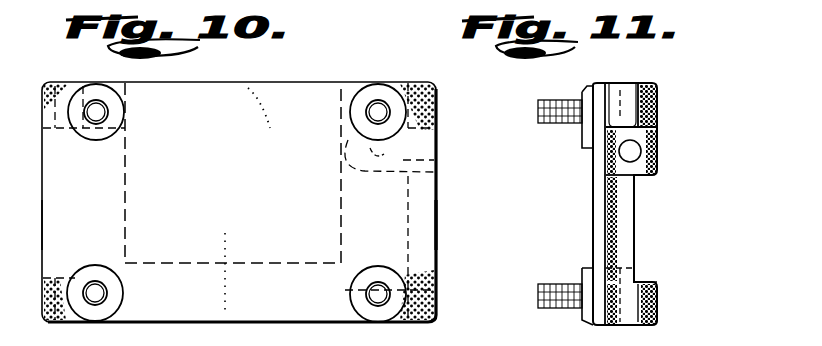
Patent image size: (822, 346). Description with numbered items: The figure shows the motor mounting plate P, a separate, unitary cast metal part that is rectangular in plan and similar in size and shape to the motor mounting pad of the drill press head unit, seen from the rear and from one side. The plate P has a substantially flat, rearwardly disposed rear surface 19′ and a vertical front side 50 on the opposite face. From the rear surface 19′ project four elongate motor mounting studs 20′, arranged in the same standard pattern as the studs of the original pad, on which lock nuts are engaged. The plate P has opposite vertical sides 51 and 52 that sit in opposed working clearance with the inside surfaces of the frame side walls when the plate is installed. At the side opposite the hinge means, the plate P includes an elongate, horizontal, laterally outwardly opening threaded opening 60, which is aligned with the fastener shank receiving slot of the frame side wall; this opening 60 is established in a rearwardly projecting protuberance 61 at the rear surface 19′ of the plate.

In FIG. 10, the motor mounting plate P is at (308, 81).
In FIG. 10, the rear surface 19′ is at (270, 153).
In FIG. 11, the rear surface 19′ is at (593, 186).
In FIG. 10, the motor mounting studs 20′ is at (109, 112).
In FIG. 11, the motor mounting studs 20′ is at (560, 127).
In FIG. 11, the front side 50 is at (606, 223).
In FIG. 10, the vertical side 51 is at (37, 219).
In FIG. 10, the vertical side 52 is at (437, 222).
In FIG. 11, the vertical side 52 is at (593, 228).
In FIG. 10, the threaded opening 60 is at (392, 174).
In FIG. 11, the threaded opening 60 is at (619, 152).
In FIG. 11, the protuberance 61 is at (657, 137).